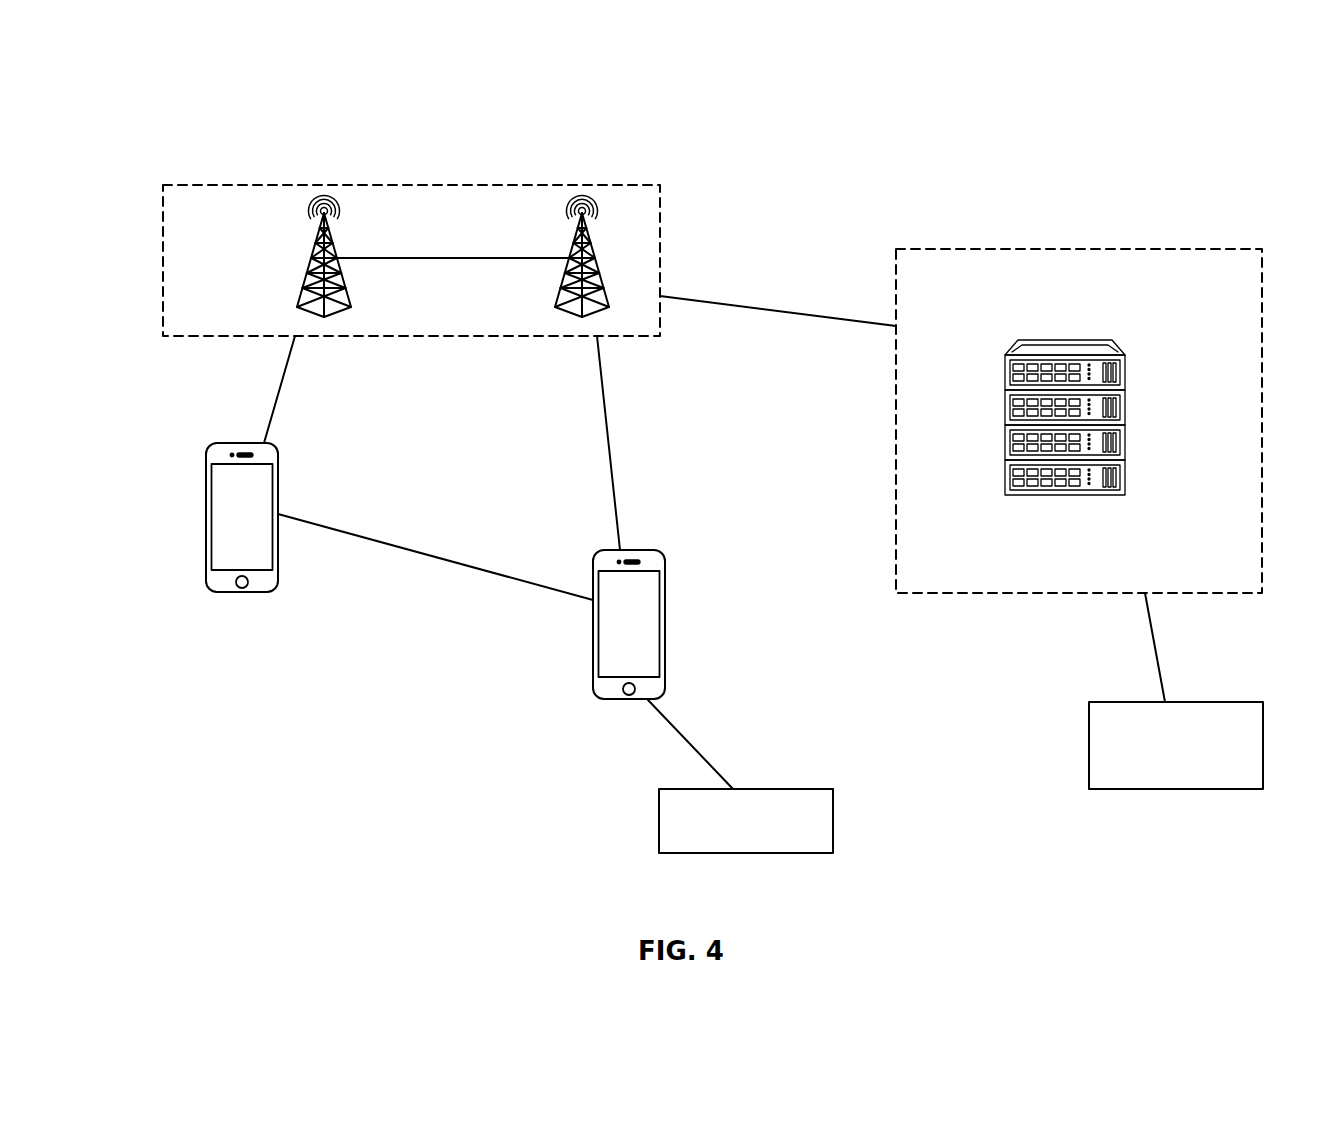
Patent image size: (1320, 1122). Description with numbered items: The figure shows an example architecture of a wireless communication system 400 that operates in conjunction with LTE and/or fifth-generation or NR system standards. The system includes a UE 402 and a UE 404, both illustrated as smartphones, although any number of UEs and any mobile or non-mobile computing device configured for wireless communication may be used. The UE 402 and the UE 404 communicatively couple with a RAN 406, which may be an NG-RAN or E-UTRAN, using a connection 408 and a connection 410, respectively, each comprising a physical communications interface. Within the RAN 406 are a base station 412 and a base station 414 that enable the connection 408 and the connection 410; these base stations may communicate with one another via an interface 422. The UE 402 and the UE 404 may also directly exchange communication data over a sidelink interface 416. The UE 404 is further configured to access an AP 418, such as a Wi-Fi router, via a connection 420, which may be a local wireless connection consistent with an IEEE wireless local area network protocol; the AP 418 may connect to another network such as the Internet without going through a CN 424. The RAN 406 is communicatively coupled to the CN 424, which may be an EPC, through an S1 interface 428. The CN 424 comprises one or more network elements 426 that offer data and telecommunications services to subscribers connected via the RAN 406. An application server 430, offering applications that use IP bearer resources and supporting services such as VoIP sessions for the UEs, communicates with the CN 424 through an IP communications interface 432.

The wireless communication system 400 is at (1180, 108).
The UE 402 is at (207, 478).
The UE 404 is at (667, 587).
The RAN 406 is at (412, 185).
The connection 408 is at (284, 380).
The connection 410 is at (603, 425).
The base station 412 is at (318, 228).
The base station 414 is at (578, 228).
The sidelink interface 416 is at (426, 555).
The AP 418 is at (659, 835).
The connection 420 is at (675, 733).
The interface 422 is at (407, 258).
The CN 424 is at (1085, 249).
The network elements 426 is at (1127, 375).
The S1 interface 428 is at (748, 306).
The application server 430 is at (1090, 725).
The IP communications interface 432 is at (1158, 660).